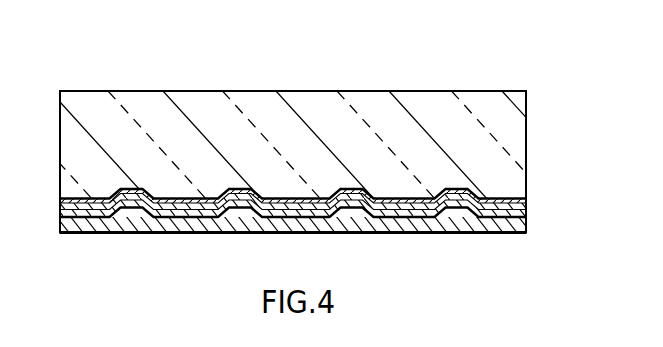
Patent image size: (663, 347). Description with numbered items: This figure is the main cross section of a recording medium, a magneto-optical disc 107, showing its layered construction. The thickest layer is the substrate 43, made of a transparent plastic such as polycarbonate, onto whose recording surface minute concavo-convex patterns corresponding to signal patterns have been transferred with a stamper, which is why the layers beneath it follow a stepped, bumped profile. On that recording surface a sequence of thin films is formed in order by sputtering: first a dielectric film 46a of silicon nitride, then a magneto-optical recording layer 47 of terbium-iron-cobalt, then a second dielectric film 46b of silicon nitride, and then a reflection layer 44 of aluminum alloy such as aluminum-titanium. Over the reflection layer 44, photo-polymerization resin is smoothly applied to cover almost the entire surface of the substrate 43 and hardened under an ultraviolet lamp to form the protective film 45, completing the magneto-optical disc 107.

The magneto-optical disc 107 is at (494, 81).
The substrate 43 is at (515, 120).
The dielectric film 46a is at (527, 198).
The magneto-optical recording layer 47 is at (528, 203).
The dielectric film 46b is at (527, 210).
The protective film 45 is at (527, 226).
The reflection layer 44 is at (500, 233).